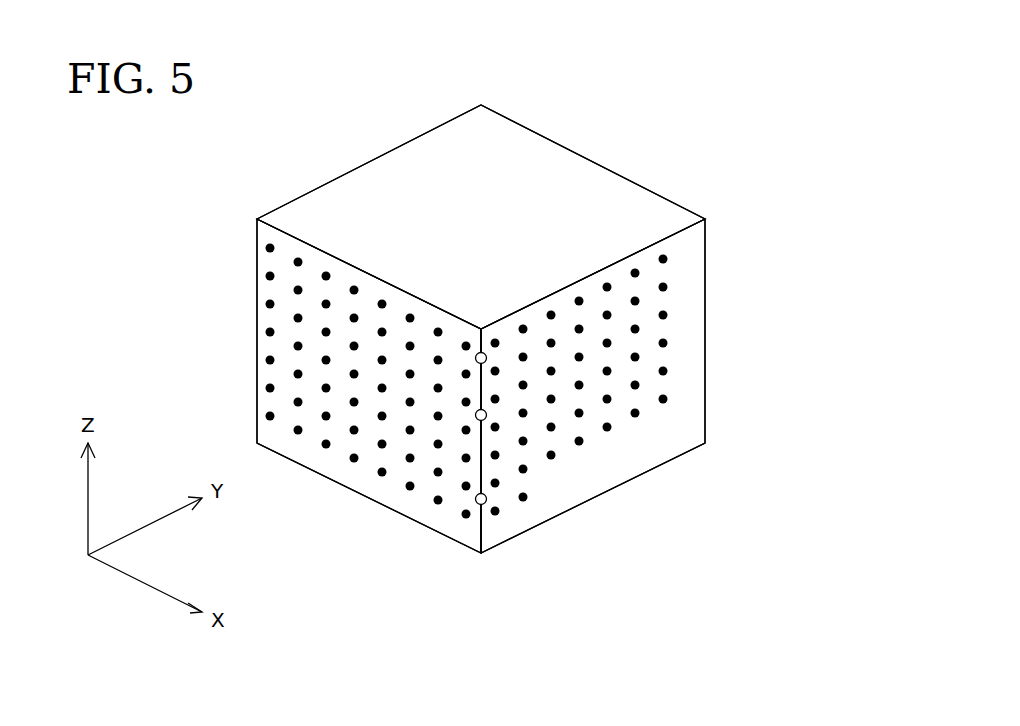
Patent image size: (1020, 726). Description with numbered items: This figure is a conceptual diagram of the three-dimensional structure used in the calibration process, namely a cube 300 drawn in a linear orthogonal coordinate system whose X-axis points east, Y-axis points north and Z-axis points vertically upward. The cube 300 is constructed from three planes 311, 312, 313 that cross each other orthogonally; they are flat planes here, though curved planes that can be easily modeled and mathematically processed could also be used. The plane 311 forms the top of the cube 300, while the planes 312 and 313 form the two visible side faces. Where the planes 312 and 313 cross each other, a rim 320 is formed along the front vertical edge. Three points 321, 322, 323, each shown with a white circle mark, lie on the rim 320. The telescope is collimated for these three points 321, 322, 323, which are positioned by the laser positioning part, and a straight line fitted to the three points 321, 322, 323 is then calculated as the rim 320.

The cube 300 is at (721, 288).
The plane 311 is at (510, 163).
The plane 312 is at (685, 423).
The plane 313 is at (393, 500).
The rim 320 is at (483, 528).
The point 321 is at (479, 352).
The point 322 is at (486, 416).
The point 323 is at (486, 500).